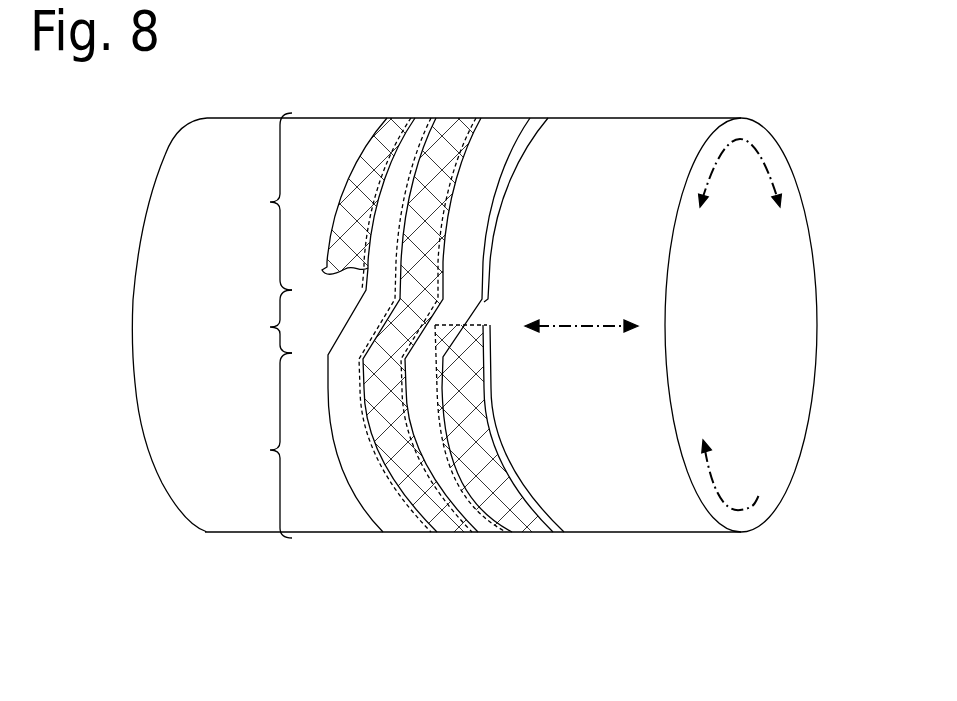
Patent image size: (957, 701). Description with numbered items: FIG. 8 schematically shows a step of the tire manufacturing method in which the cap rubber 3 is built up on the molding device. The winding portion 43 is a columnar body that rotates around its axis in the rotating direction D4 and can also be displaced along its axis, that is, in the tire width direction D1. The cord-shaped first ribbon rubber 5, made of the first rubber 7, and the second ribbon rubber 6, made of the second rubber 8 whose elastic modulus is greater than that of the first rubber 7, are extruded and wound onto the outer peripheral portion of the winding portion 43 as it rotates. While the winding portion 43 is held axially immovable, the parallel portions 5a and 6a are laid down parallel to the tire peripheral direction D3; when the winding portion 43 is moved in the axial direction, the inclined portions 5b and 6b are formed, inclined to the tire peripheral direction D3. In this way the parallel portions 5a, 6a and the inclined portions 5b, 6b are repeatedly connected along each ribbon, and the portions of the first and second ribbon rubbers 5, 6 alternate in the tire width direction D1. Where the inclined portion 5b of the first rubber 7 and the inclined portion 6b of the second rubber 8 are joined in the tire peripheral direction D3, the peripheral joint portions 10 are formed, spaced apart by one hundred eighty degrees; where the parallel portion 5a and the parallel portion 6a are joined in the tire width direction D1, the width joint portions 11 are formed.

The cap rubber 3 is at (558, 100).
The first ribbon rubber 5 is at (399, 118).
The second ribbon rubber 6 is at (447, 117).
The first rubber 7 is at (445, 526).
The second rubber 8 is at (395, 529).
The peripheral joint portion 10 is at (380, 325).
The width joint portion 11 is at (458, 188).
The winding portion 43 is at (145, 208).
The parallel portion 5a is at (252, 286).
The parallel portion 6a is at (266, 364).
The inclined portion 5b is at (252, 321).
The inclined portion 6b is at (252, 323).
The tire width direction D1 is at (581, 337).
The tire peripheral direction D3 is at (740, 173).
The rotating direction D4 is at (731, 475).